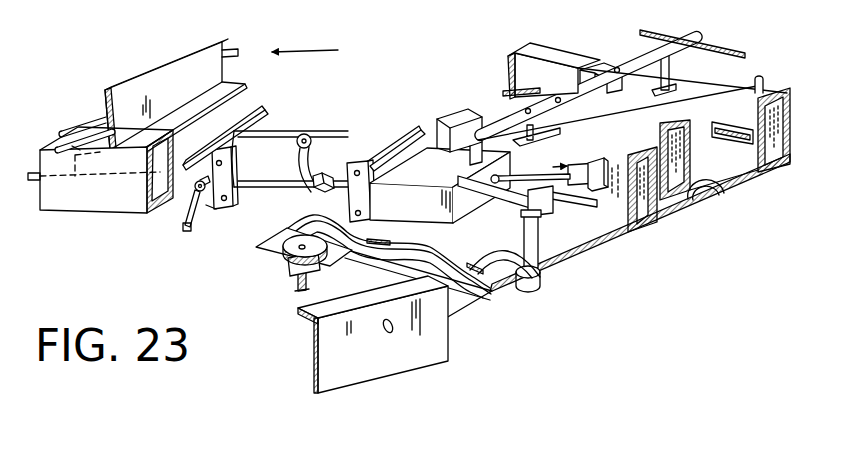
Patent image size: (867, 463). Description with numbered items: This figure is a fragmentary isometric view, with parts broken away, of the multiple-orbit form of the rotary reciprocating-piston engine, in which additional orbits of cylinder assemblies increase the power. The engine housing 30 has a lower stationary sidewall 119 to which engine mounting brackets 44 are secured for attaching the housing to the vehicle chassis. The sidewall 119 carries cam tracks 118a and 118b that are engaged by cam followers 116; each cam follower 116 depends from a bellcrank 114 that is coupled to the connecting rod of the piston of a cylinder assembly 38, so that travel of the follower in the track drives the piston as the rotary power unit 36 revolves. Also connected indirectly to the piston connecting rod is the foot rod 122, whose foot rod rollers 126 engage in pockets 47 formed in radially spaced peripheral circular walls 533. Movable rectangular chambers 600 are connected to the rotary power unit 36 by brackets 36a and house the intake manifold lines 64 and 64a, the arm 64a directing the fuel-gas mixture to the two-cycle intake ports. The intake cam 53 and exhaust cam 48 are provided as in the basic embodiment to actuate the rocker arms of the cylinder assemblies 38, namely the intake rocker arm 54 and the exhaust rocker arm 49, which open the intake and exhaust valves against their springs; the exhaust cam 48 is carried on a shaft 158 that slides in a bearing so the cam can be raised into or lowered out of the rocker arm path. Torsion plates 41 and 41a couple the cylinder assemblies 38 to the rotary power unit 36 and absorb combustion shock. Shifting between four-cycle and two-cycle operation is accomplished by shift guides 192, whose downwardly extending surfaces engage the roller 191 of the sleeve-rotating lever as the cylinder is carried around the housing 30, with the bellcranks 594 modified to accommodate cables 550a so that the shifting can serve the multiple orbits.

The housing 30 is at (473, 320).
The rotary power unit 36 is at (405, 108).
The bracket 36a is at (195, 62).
The cylinder assembly 38 is at (363, 123).
The torsion plate 41 is at (270, 112).
The torsion plate 41a is at (423, 128).
The mounting bracket 44 is at (382, 348).
The pocket 47 is at (590, 162).
The exhaust cam 48 is at (790, 137).
The exhaust rocker arm 49 is at (226, 130).
The intake cam 53 is at (292, 255).
The intake rocker arm 54 is at (187, 221).
The intake manifold 64 is at (78, 148).
The arm of intake manifold 64a is at (312, 194).
The bellcrank 114 is at (513, 206).
The cam follower 116 is at (537, 284).
The cam track 118a is at (493, 290).
The cam track 118b is at (715, 192).
The lower stationary sidewall 119 is at (600, 258).
The foot rod 122 is at (528, 152).
The foot rod roller 126 is at (612, 180).
The shaft 158 is at (760, 81).
The roller 191 is at (325, 110).
The shift guide 192 is at (590, 73).
The peripheral circular wall 533 is at (631, 232).
The cable 550a is at (525, 92).
The bellcrank 594 is at (507, 118).
The movable rectangular chamber 600 is at (110, 208).